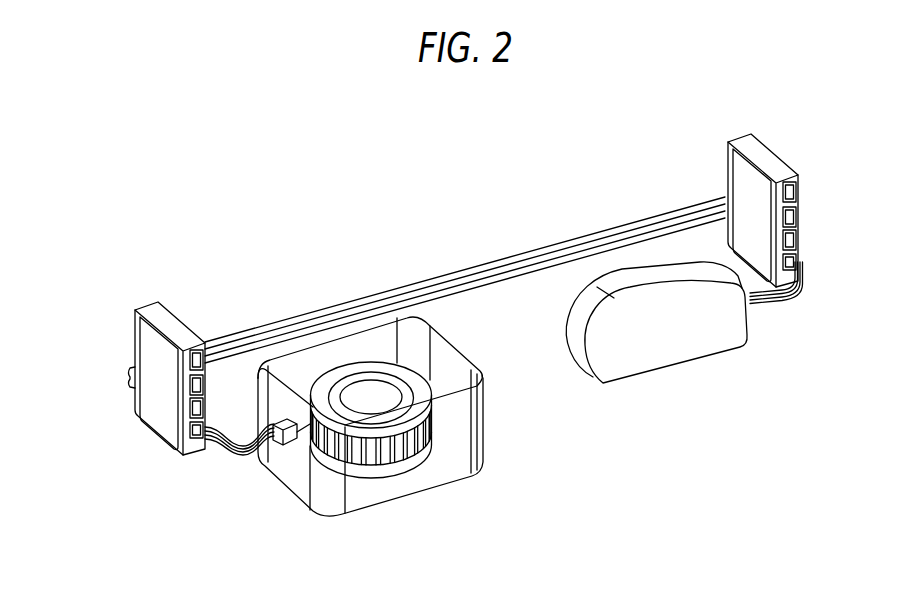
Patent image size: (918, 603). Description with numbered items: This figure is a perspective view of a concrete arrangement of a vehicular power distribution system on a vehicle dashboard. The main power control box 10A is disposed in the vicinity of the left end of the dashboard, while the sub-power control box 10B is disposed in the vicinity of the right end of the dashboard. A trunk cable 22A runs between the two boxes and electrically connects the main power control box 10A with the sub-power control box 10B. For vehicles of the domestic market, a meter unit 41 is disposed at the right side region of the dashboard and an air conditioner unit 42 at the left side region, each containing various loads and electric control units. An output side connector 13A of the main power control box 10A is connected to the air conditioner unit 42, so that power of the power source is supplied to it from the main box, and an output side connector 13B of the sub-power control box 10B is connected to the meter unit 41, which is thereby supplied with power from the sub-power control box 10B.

The main power control box 10A is at (148, 388).
The output side connector 13A is at (197, 442).
The trunk cable 22A is at (512, 262).
The sub-power control box 10B is at (767, 218).
The output side connector 13B is at (792, 255).
The meter unit 41 is at (714, 345).
The air conditioner unit 42 is at (484, 418).